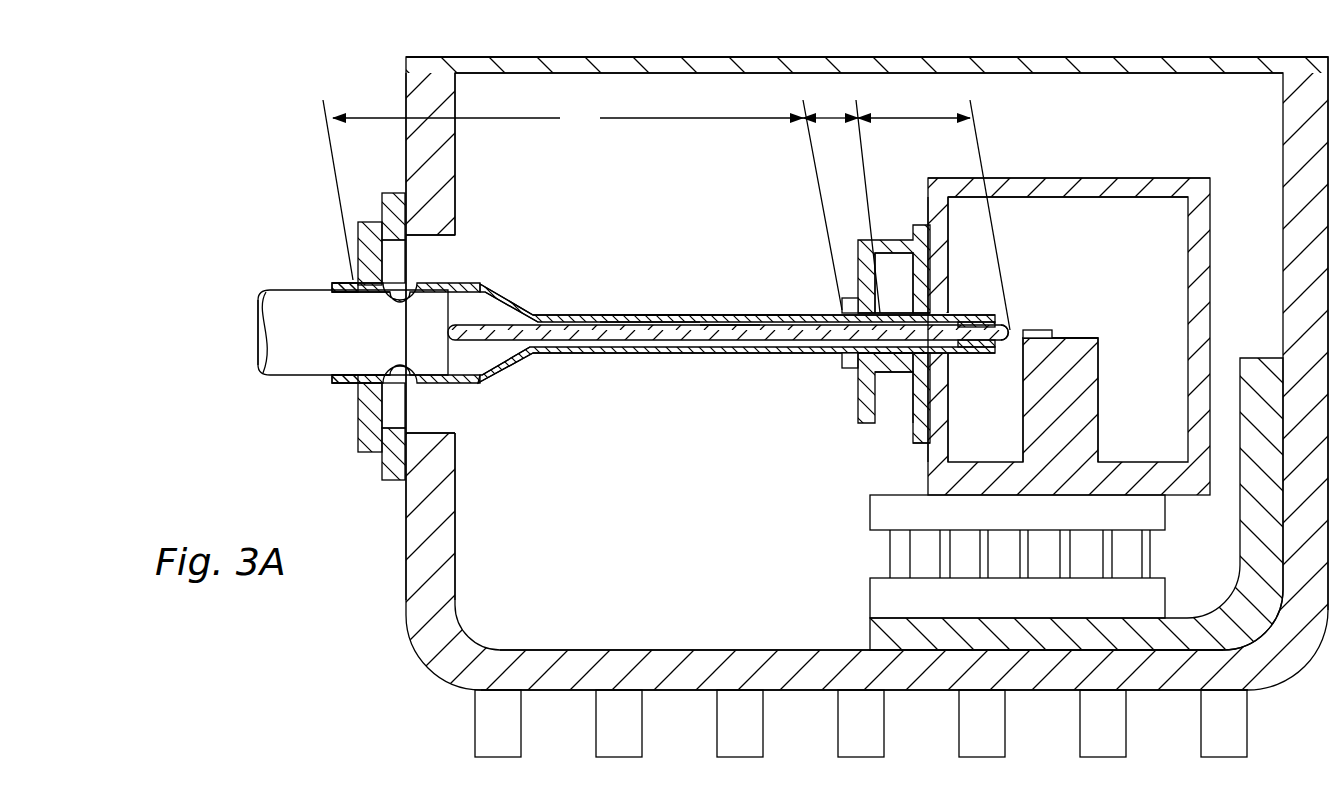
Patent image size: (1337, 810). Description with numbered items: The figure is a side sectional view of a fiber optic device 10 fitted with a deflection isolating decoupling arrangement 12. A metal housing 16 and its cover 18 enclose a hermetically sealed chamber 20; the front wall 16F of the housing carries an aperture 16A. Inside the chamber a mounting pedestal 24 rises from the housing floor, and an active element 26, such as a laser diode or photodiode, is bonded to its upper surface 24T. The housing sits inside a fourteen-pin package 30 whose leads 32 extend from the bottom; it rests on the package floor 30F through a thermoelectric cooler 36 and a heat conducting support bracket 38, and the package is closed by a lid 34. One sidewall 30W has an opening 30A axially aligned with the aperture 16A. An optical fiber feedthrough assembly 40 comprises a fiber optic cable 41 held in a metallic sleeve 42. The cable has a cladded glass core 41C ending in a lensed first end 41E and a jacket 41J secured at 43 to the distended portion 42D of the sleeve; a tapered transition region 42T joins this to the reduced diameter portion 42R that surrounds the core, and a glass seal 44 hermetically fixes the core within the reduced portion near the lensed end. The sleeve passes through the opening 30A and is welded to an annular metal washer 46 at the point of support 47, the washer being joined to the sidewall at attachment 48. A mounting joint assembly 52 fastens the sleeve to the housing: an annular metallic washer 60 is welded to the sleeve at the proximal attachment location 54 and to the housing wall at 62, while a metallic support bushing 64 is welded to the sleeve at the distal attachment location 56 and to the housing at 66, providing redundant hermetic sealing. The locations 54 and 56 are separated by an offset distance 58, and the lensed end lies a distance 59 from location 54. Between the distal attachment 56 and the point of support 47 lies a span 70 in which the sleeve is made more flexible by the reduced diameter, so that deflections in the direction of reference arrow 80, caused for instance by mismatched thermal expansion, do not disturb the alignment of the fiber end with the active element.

The fiber optic device 10 is at (1000, 46).
The deflection isolating decoupling arrangement 12 is at (703, 221).
The housing 16 is at (1218, 255).
The aperture 16A is at (945, 395).
The wall 16F is at (950, 288).
The cover 18 is at (1060, 178).
The chamber 20 is at (1146, 255).
The mounting pedestal 24 is at (1060, 410).
The upper surface 24T is at (1090, 338).
The active element 26 is at (1045, 332).
The package 30 is at (385, 575).
The opening 30A is at (456, 240).
The floor 30F is at (612, 670).
The sidewall 30W is at (430, 527).
The leads 32 is at (440, 740).
The lid 34 is at (816, 57).
The thermoelectric cooler 36 is at (880, 553).
The heat conducting support bracket 38 is at (870, 636).
The optical fiber feedthrough assembly 40 is at (690, 312).
The fiber optic cable 41 is at (707, 328).
The cladded glass core 41C is at (722, 325).
The first end 41E is at (1010, 330).
The jacket 41J is at (303, 325).
The metallic sleeve 42 is at (590, 312).
The distended portion 42D is at (456, 285).
The reduced diameter portion 42R is at (614, 313).
The tapered transition region 42T is at (512, 303).
The securement of jacket 43 is at (425, 345).
The glass seal 44 is at (965, 355).
The annular metal washer 46 is at (367, 220).
The point of support 47 is at (347, 283).
The attachment 48 is at (404, 192).
The mounting joint assembly 52 is at (815, 432).
The first proximal attachment location 54 is at (885, 308).
The second distal attachment location 56 is at (838, 312).
The offset distance 58 is at (814, 116).
The distance 59 is at (902, 116).
The annular metallic washer 60 is at (870, 418).
The attachment 62 is at (915, 392).
The metallic support bushing 64 is at (924, 236).
The attachment 66 is at (925, 446).
The span 70 is at (563, 190).
The reference arrow 80 is at (208, 302).